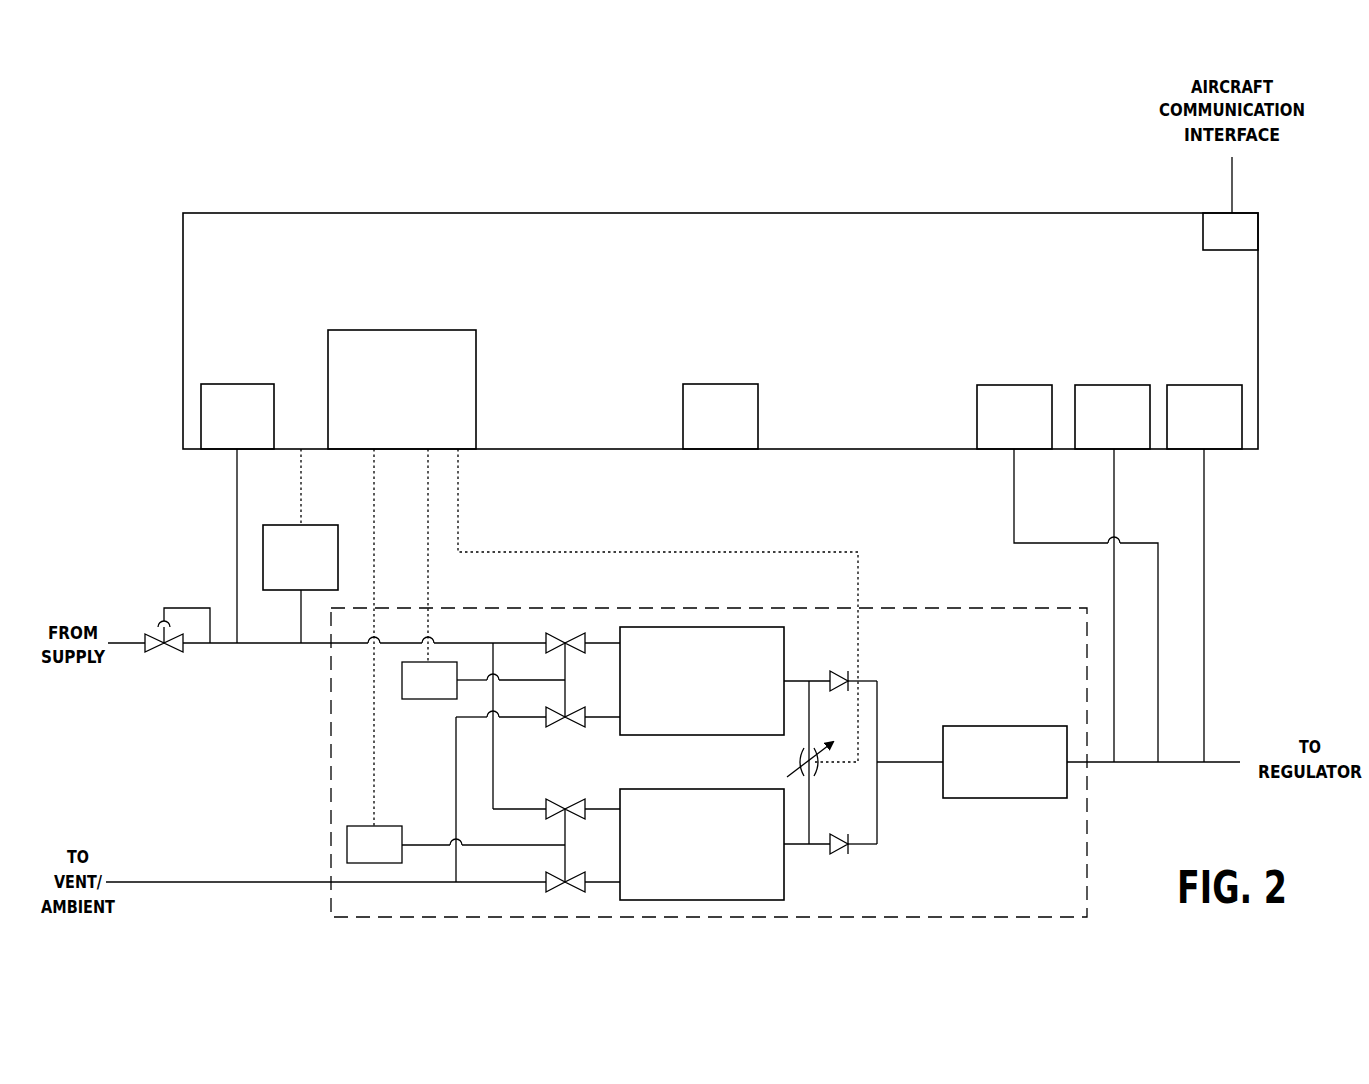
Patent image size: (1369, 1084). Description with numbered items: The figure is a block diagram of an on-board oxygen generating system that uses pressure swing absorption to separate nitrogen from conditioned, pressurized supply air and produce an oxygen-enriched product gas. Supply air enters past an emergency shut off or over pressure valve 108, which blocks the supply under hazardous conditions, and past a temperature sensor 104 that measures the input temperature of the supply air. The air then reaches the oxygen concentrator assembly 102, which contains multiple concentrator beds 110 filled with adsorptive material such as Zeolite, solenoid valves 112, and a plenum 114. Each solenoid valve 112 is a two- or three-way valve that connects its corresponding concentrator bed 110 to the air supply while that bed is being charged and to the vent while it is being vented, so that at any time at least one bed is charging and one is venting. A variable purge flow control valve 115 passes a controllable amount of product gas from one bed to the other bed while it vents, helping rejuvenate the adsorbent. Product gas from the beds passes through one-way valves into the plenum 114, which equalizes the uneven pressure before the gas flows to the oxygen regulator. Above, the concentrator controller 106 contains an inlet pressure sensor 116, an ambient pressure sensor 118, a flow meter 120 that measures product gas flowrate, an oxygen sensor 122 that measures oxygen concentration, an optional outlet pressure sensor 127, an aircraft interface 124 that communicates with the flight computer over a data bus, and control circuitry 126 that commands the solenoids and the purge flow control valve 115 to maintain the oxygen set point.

The oxygen concentrator assembly 102 is at (630, 607).
The temperature sensor 104 is at (286, 580).
The concentrator controller 106 is at (702, 278).
The over pressure valve 108 is at (153, 654).
The concentrator beds 110 is at (688, 701).
The solenoid valves 112 is at (423, 699).
The plenum 114 is at (990, 786).
The purge flow control valve 115 is at (815, 765).
The inlet pressure sensor 116 is at (222, 439).
The ambient pressure sensor 118 is at (705, 439).
The flow meter 120 is at (1189, 439).
The oxygen sensor 122 is at (1099, 439).
The aircraft interface 124 is at (1215, 240).
The control circuitry 126 is at (387, 421).
The outlet pressure sensor 127 is at (999, 439).